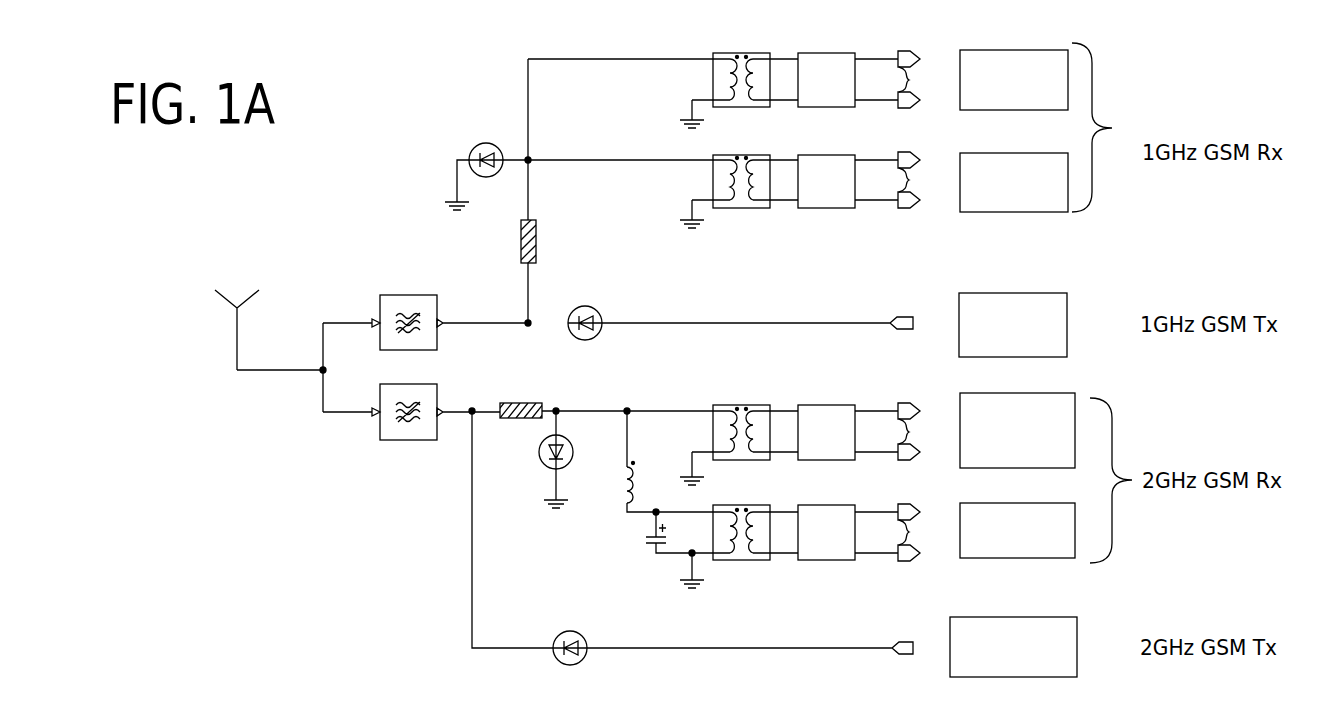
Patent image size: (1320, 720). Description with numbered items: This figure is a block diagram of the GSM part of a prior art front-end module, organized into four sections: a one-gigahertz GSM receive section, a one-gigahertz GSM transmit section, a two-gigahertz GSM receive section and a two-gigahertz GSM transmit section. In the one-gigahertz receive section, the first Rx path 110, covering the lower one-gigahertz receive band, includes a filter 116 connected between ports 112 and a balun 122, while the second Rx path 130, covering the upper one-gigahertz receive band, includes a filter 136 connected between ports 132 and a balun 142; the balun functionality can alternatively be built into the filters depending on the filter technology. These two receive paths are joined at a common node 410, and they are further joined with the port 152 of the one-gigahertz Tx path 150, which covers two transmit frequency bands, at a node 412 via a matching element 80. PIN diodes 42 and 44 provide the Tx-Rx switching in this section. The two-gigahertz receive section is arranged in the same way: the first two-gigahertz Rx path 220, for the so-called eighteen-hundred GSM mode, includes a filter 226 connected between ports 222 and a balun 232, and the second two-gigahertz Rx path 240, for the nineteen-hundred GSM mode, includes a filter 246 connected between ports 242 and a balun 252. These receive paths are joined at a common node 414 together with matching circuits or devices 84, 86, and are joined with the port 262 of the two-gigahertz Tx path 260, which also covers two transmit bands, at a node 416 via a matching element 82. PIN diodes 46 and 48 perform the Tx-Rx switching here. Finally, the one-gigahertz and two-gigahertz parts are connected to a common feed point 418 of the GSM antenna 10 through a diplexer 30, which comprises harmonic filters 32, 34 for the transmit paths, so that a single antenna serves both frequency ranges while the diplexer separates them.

The GSM antenna 10 is at (235, 347).
The diplexer 30 is at (345, 304).
The harmonic filter 32 is at (407, 295).
The harmonic filter 34 is at (408, 440).
The PIN diode 42 is at (490, 177).
The PIN diode 44 is at (593, 340).
The PIN diode 46 is at (538, 451).
The PIN diode 48 is at (566, 631).
The matching element 80 is at (538, 234).
The matching element 82 is at (522, 401).
The matching circuit 84 is at (621, 487).
The matching circuit 86 is at (640, 551).
The 869–894 MHz Rx path 110 is at (874, 79).
The ports 112 is at (887, 79).
The filter 116 is at (822, 108).
The balun 122 is at (742, 108).
The 925–960 MHz Rx path 130 is at (874, 180).
The ports 132 is at (887, 180).
The filter 136 is at (821, 209).
The balun 142 is at (737, 209).
The 1 GHz GSM Tx path 150 is at (921, 293).
The port 152 is at (898, 331).
The 1805–1880 MHz Rx path 220 is at (877, 422).
The ports 222 is at (887, 431).
The filter 226 is at (822, 404).
The balun 232 is at (745, 404).
The 1930–1990 MHz Rx path 240 is at (894, 530).
The ports 242 is at (887, 532).
The filter 246 is at (820, 561).
The balun 252 is at (738, 561).
The 2 GHz GSM Tx path 260 is at (925, 617).
The port 262 is at (900, 655).
The common node 410 is at (531, 160).
The node 412 is at (531, 323).
The common node 414 is at (630, 409).
The node 416 is at (478, 409).
The common feed point 418 is at (318, 372).